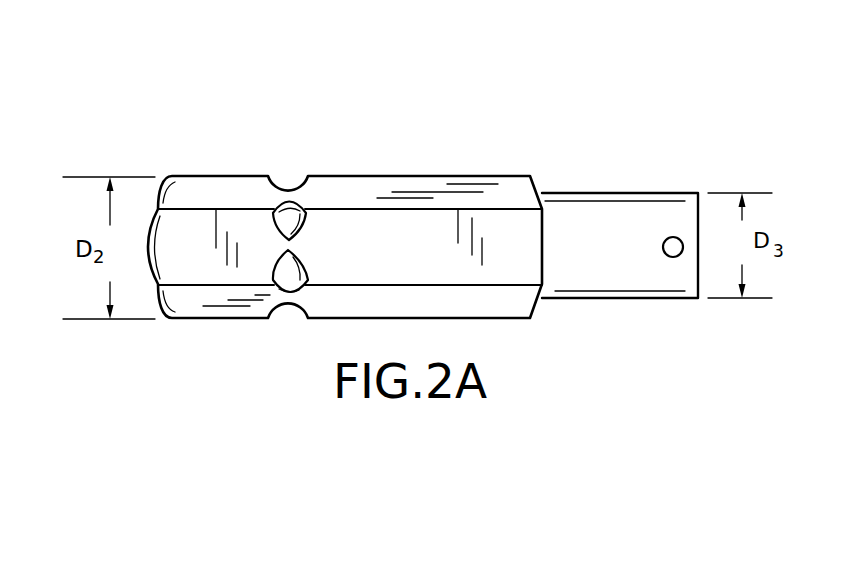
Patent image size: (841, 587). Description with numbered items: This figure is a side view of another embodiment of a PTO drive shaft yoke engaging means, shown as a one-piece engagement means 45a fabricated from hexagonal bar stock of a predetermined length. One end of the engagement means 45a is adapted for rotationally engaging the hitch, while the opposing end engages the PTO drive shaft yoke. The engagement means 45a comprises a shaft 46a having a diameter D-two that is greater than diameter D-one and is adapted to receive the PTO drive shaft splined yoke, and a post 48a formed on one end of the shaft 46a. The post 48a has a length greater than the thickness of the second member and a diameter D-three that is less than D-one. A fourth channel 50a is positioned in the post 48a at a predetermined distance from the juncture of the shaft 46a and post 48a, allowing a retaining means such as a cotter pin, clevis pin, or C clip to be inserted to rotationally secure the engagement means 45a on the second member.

The engagement means 45a is at (287, 133).
The shaft 46a is at (203, 176).
The post 48a is at (595, 267).
The fourth channel 50a is at (667, 237).